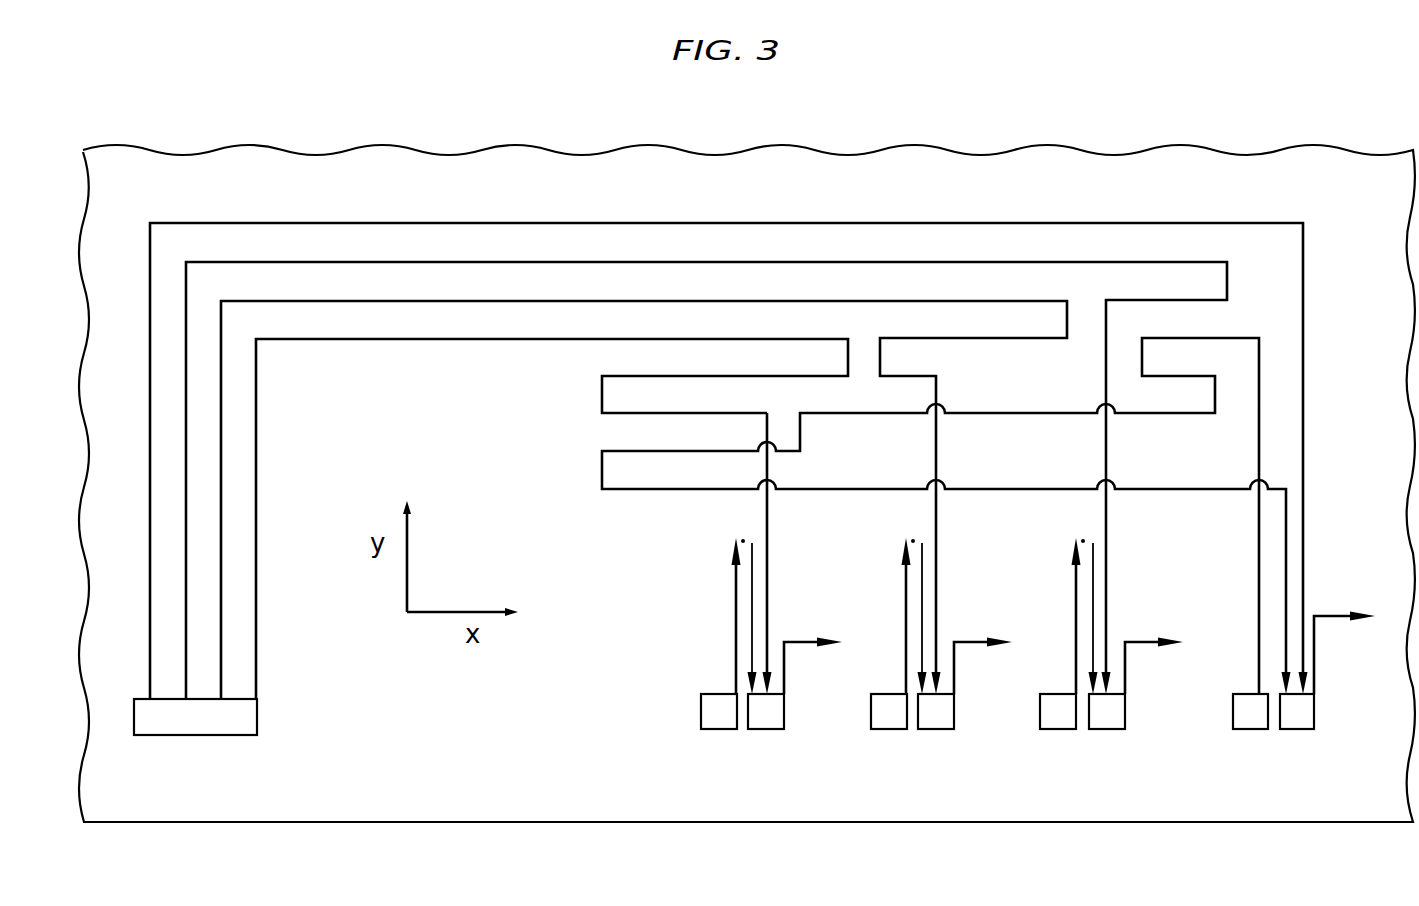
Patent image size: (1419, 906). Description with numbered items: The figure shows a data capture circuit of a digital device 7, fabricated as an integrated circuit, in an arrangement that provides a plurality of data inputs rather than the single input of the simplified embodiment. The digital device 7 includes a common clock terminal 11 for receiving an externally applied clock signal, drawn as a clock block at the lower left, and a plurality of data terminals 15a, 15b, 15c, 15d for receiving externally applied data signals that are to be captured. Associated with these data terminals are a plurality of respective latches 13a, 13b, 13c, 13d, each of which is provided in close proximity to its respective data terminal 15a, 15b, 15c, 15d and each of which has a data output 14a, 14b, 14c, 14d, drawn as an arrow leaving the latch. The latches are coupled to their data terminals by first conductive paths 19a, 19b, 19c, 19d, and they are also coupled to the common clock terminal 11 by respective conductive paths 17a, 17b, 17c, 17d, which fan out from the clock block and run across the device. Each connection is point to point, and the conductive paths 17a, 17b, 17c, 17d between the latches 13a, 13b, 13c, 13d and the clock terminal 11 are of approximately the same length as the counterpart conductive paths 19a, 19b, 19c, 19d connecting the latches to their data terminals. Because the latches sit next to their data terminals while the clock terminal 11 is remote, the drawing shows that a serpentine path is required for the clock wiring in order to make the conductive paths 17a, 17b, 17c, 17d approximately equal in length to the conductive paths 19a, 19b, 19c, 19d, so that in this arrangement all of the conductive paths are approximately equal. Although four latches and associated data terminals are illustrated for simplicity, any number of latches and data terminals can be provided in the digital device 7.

The digital device 7 is at (530, 785).
The clock terminal 11 is at (258, 709).
The latch 13a is at (771, 723).
The latch 13b is at (941, 723).
The latch 13c is at (1111, 723).
The latch 13d is at (1301, 723).
The data output 14a is at (797, 638).
The data output 14b is at (967, 638).
The data output 14c is at (1135, 640).
The data output 14d is at (1330, 613).
The data terminal 15a is at (713, 723).
The data terminal 15b is at (883, 723).
The data terminal 15c is at (1052, 723).
The data terminal 15d is at (1243, 723).
The conductive path 17a is at (552, 504).
The conductive path 17b is at (644, 485).
The conductive path 17c is at (706, 466).
The conductive path 17d is at (729, 447).
The conductive path 19a is at (779, 587).
The conductive path 19b is at (906, 582).
The conductive path 19c is at (1076, 576).
The conductive path 19d is at (1257, 424).